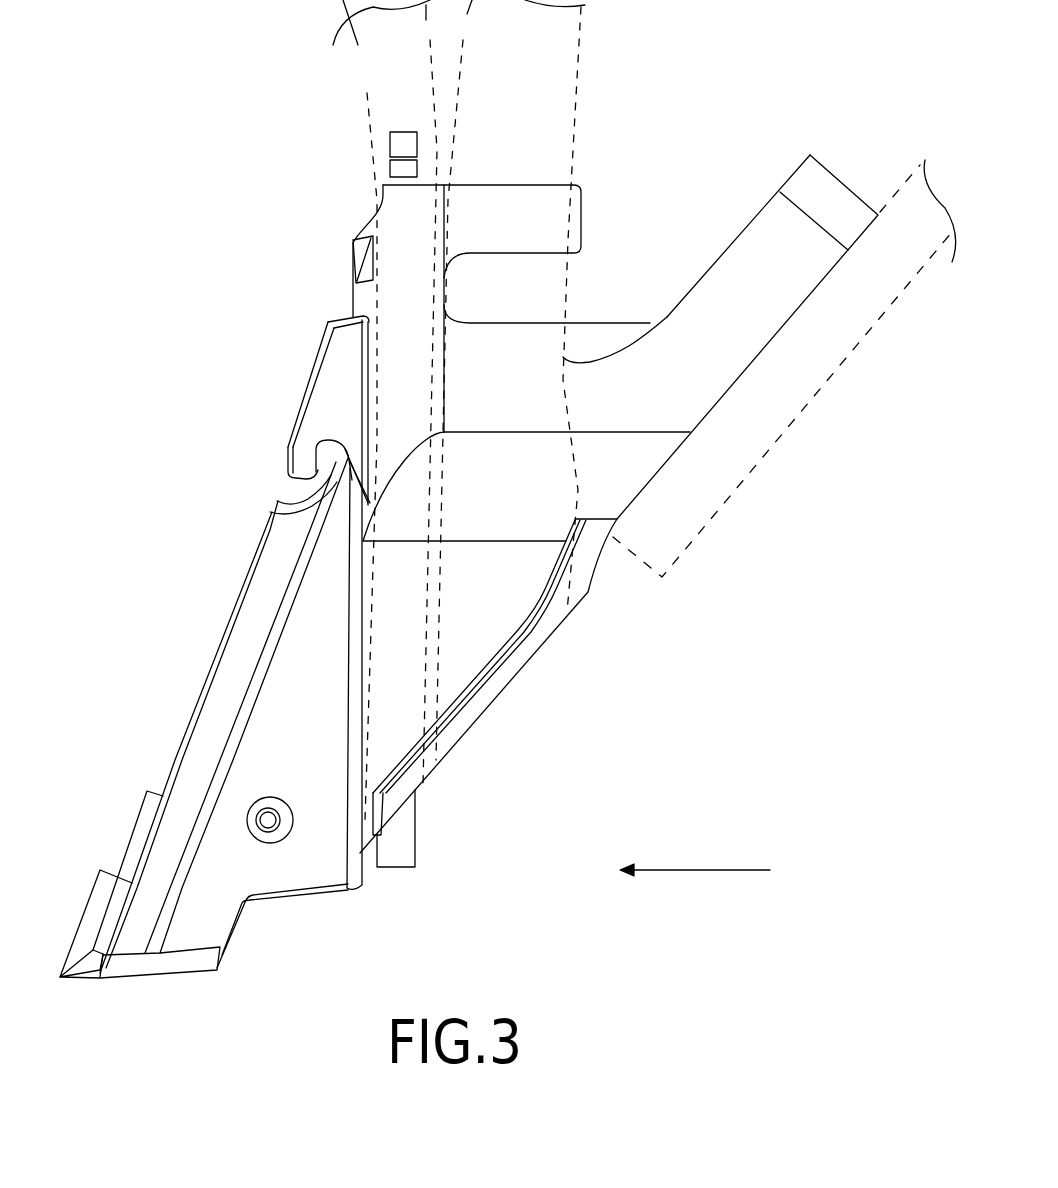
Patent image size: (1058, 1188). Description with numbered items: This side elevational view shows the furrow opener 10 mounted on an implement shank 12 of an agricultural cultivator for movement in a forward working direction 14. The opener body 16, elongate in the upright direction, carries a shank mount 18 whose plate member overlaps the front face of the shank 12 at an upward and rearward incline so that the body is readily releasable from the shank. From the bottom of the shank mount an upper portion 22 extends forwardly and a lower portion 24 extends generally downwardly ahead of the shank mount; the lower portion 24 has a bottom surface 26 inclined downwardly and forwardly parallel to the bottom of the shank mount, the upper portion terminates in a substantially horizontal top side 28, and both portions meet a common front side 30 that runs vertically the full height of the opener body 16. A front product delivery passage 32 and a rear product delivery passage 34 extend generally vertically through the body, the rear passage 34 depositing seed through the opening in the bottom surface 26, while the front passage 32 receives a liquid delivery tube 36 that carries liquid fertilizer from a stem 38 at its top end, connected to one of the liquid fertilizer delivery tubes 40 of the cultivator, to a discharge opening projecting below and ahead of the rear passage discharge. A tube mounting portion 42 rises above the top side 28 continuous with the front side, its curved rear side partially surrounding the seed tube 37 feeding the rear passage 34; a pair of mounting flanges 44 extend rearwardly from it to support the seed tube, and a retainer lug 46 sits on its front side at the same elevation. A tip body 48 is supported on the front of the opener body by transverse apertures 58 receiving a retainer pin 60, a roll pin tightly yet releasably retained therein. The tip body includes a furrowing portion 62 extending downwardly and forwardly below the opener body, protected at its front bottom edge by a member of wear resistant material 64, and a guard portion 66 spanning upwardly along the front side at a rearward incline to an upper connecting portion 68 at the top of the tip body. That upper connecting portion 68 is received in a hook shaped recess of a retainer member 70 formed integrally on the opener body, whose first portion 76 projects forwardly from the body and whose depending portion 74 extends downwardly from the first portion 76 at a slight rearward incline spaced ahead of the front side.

The furrow opener 10 is at (142, 417).
The implement shank 12 is at (828, 367).
The forward working direction 14 is at (690, 872).
The opener body 16 is at (556, 655).
The shank mount 18 is at (745, 233).
The upper portion 22 is at (507, 411).
The lower portion 24 is at (522, 616).
The bottom surface 26 is at (485, 713).
The top side 28 is at (608, 330).
The front side 30 is at (360, 577).
The front product delivery passage 32 is at (377, 355).
The rear product delivery passage 34 is at (650, 324).
The liquid delivery tube 36 is at (417, 840).
The seed tube 37 is at (577, 60).
The stem 38 is at (388, 147).
The liquid fertilizer delivery tube 40 is at (360, 63).
The tube mounting portion 42 is at (399, 287).
The mounting flanges 44 is at (580, 196).
The retainer lug 46 is at (362, 265).
The tip body 48 is at (168, 686).
The transverse apertures 58 is at (276, 835).
The retainer pin 60 is at (260, 813).
The furrowing portion 62 is at (172, 968).
The member of wear resistant material 64 is at (138, 835).
The guard portion 66 is at (222, 642).
The upper connecting portion 68 is at (334, 468).
The retainer member 70 is at (305, 400).
The depending portion 74 is at (313, 463).
The first portion 76 is at (331, 440).